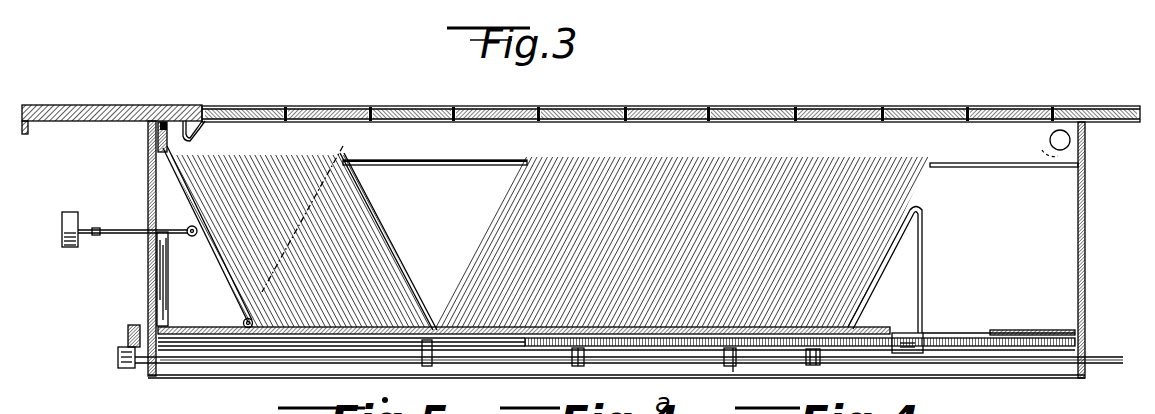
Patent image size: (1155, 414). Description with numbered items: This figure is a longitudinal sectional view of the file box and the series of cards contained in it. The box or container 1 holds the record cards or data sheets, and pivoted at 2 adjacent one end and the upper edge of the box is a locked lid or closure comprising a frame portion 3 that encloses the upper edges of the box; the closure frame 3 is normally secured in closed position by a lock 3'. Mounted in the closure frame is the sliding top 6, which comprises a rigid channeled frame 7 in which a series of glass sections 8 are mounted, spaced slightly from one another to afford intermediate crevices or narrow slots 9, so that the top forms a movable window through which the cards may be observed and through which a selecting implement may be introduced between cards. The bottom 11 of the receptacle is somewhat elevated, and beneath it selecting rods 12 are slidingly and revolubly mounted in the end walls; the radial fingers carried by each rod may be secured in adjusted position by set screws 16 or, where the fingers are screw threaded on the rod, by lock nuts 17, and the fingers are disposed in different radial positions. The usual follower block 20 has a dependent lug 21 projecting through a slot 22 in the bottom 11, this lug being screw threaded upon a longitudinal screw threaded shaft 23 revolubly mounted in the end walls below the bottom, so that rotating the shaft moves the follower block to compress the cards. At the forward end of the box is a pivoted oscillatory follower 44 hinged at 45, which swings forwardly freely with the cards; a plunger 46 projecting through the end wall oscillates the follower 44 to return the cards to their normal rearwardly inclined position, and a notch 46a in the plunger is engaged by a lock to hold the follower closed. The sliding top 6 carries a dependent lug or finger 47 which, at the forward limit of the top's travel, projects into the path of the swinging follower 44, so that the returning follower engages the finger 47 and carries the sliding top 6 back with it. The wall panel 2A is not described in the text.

The box or container 1 is at (549, 241).
The pivot 2 is at (1048, 142).
The wall panel 2A is at (168, 293).
The frame portion 3 is at (142, 137).
The lock 3' is at (124, 248).
The sliding top 6 is at (172, 108).
The channeled frame 7 is at (362, 108).
The glass sections 8 is at (426, 108).
The narrow slots 9 is at (464, 108).
The bottom 11 is at (188, 330).
The selecting rods 12 is at (325, 352).
The set screws 16 is at (724, 357).
The lock nuts 17 is at (813, 364).
The follower block 20 is at (926, 290).
The dependent lug 21 is at (906, 352).
The slot 22 is at (940, 345).
The screw threaded shaft 23 is at (512, 345).
The oscillatory follower 44 is at (224, 264).
The hinge 45 is at (247, 328).
The plunger 46 is at (118, 229).
The notch 46a is at (104, 240).
The dependent lug or finger 47 is at (202, 131).